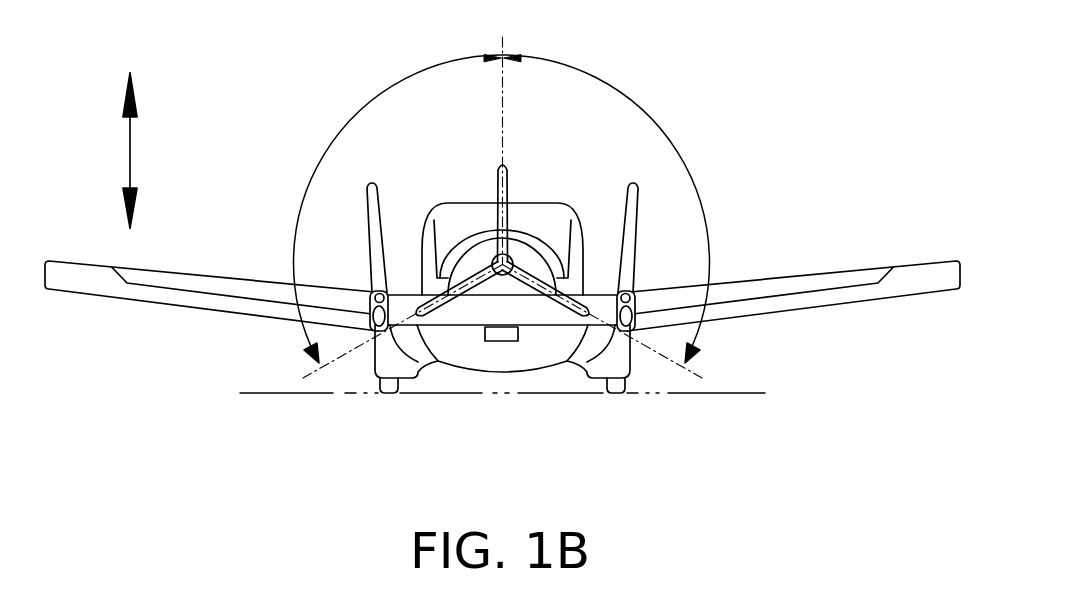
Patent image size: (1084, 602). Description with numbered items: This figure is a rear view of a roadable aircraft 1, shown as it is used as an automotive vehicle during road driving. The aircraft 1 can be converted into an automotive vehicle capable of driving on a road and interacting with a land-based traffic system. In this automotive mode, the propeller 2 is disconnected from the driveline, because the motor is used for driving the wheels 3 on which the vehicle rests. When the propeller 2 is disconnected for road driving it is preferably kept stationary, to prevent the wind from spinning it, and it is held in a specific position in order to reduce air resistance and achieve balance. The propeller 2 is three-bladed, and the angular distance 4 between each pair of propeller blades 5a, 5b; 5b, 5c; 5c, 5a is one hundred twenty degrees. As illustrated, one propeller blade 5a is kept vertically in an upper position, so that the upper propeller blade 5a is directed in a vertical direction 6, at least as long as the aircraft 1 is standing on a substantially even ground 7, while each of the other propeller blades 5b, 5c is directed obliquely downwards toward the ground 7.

The roadable aircraft 1 is at (762, 82).
The propeller 2 is at (502, 250).
The wheels 3 is at (389, 386).
The angular distance 4 is at (322, 160).
The propeller blade 5a is at (495, 183).
The propeller blade 5b is at (540, 300).
The propeller blade 5c is at (463, 298).
The vertical direction 6 is at (128, 150).
The ground 7 is at (278, 392).